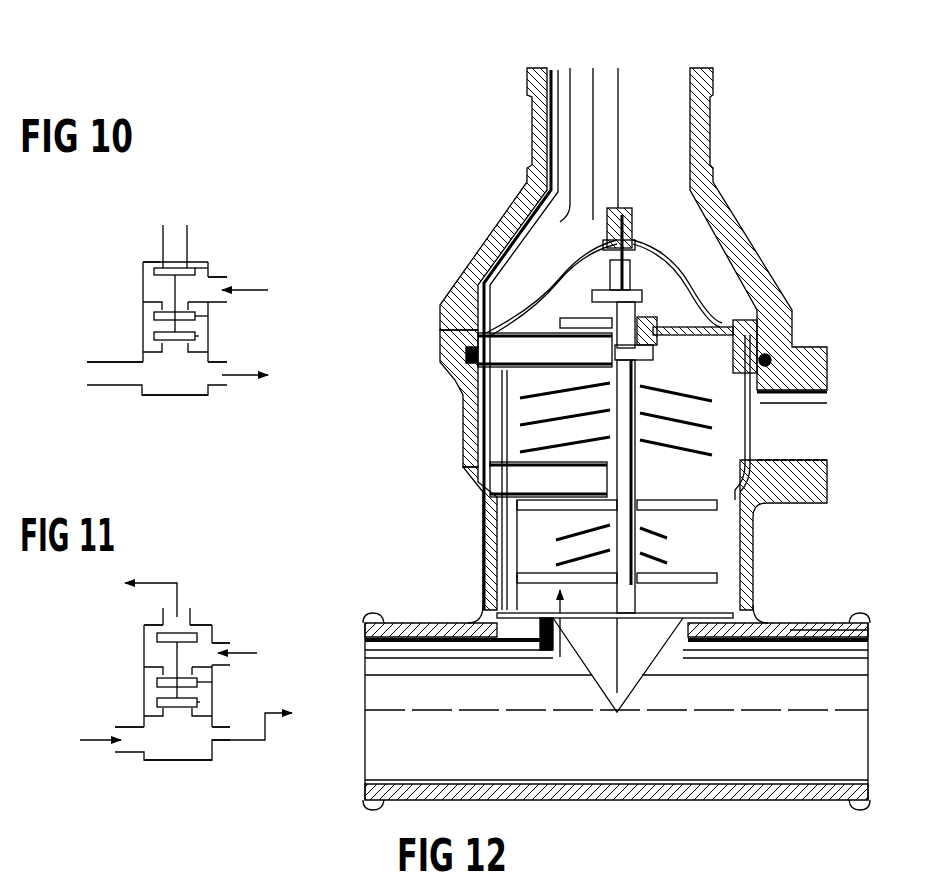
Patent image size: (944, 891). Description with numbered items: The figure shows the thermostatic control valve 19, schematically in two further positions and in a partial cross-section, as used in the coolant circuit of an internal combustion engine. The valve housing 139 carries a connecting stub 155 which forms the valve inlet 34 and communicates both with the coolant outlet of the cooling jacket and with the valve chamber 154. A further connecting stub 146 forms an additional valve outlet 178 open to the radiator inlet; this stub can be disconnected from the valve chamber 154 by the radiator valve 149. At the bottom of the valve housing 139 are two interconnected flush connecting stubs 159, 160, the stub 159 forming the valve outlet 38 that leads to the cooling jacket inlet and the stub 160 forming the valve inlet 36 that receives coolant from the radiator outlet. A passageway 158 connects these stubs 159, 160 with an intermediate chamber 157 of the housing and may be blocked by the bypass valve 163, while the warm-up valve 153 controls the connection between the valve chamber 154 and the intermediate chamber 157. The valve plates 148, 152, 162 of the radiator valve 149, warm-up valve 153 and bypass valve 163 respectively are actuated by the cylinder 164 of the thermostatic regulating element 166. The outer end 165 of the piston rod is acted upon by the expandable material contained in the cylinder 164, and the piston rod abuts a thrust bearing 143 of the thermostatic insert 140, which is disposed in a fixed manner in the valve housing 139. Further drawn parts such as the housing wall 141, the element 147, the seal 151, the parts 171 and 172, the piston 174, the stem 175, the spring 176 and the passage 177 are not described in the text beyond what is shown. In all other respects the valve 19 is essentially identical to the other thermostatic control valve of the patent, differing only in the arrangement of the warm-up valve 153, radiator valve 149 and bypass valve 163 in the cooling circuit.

In FIG. 10, the thermostatic control valve 19 is at (133, 297).
In FIG. 11, the thermostatic control valve 19 is at (133, 663).
In FIG. 12, the thermostatic control valve 19 is at (600, 419).
In FIG. 10, the valve inlet 34 is at (215, 280).
In FIG. 11, the valve inlet 34 is at (210, 648).
In FIG. 12, the valve inlet 34 is at (803, 455).
In FIG. 10, the valve inlet 36 is at (142, 373).
In FIG. 11, the valve inlet 36 is at (138, 742).
In FIG. 12, the valve inlet 36 is at (404, 747).
In FIG. 10, the valve outlet 38 is at (218, 373).
In FIG. 11, the valve outlet 38 is at (215, 742).
In FIG. 12, the valve outlet 38 is at (794, 747).
In FIG. 12, the valve housing 139 is at (750, 590).
In FIG. 12, the thermostatic insert 140 is at (500, 312).
In FIG. 12, the housing wall 141 is at (753, 523).
In FIG. 12, the thrust bearing 143 is at (512, 219).
In FIG. 12, the connecting stub 146 is at (697, 148).
In FIG. 12, the retainer disc 147 is at (697, 323).
In FIG. 10, the valve plate 148 is at (152, 257).
In FIG. 11, the valve plate 148 is at (205, 635).
In FIG. 12, the valve plate 148 is at (725, 327).
In FIG. 10, the radiator valve 149 is at (200, 273).
In FIG. 11, the radiator valve 149 is at (152, 635).
In FIG. 12, the radiator valve 149 is at (662, 310).
In FIG. 12, the O-ring 151 is at (673, 498).
In FIG. 10, the valve plate 152 is at (147, 315).
In FIG. 11, the valve plate 152 is at (145, 680).
In FIG. 12, the valve plate 152 is at (538, 510).
In FIG. 10, the warm-up valve 153 is at (207, 318).
In FIG. 11, the warm-up valve 153 is at (205, 683).
In FIG. 12, the warm-up valve 153 is at (700, 513).
In FIG. 12, the valve chamber 154 is at (717, 418).
In FIG. 12, the connecting stub 155 is at (812, 363).
In FIG. 12, the intermediate chamber 157 is at (527, 543).
In FIG. 10, the passageway 158 is at (175, 350).
In FIG. 11, the passageway 158 is at (177, 713).
In FIG. 12, the passageway 158 is at (570, 628).
In FIG. 12, the connecting stub 159 is at (835, 630).
In FIG. 12, the connecting stub 160 is at (385, 628).
In FIG. 10, the valve plate 162 is at (197, 337).
In FIG. 11, the valve plate 162 is at (198, 703).
In FIG. 12, the valve plate 162 is at (523, 580).
In FIG. 10, the bypass valve 163 is at (147, 337).
In FIG. 11, the bypass valve 163 is at (145, 700).
In FIG. 12, the bypass valve 163 is at (695, 590).
In FIG. 12, the cylinder 164 is at (677, 412).
In FIG. 12, the outer end of piston rod 165 is at (604, 236).
In FIG. 10, the thermostatic regulating element 166 is at (167, 290).
In FIG. 11, the thermostatic regulating element 166 is at (170, 658).
In FIG. 12, the thermostatic regulating element 166 is at (637, 272).
In FIG. 12, the cylinder wall 171 is at (470, 393).
In FIG. 12, the diaphragm spring 172 is at (540, 268).
In FIG. 12, the piston 174 is at (467, 483).
In FIG. 12, the valve stem 175 is at (600, 590).
In FIG. 12, the secondary spring 176 is at (665, 545).
In FIG. 12, the passage 177 is at (575, 615).
In FIG. 10, the valve outlet 178 is at (153, 245).
In FIG. 11, the valve outlet 178 is at (180, 622).
In FIG. 12, the valve outlet 178 is at (633, 132).